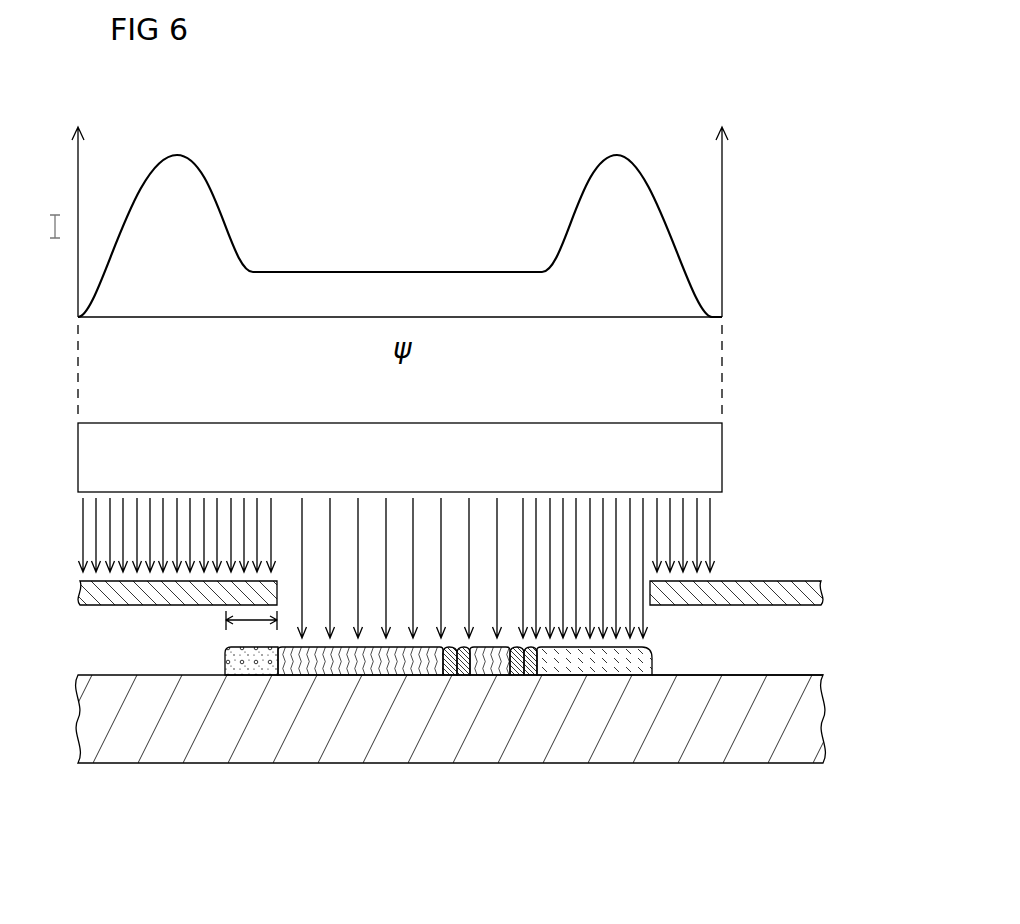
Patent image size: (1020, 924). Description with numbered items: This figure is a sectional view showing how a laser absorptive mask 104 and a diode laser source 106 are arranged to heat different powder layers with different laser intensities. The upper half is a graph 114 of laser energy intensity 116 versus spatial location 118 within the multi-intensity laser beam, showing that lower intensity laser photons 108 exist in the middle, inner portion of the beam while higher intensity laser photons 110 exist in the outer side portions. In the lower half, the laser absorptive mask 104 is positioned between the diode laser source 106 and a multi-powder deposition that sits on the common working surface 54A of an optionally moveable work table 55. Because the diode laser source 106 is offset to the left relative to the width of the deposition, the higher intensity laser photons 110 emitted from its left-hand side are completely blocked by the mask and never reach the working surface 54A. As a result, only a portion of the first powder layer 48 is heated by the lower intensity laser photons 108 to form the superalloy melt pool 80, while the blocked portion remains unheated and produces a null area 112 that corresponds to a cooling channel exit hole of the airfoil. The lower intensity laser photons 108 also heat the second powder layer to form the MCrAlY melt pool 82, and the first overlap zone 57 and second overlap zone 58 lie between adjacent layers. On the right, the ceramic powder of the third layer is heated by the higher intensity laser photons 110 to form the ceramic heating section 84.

The first powder layer 48 is at (248, 662).
The superalloy melt pool 80 is at (345, 662).
The first overlap zone 57 is at (443, 680).
The MCrAlY melt pool 82 is at (493, 662).
The second overlap zone 58 is at (510, 680).
The ceramic heating section 84 is at (600, 664).
The work table 55 is at (601, 752).
The working surface 54A is at (683, 675).
The laser absorptive mask 104 is at (118, 606).
The diode laser source 106 is at (419, 463).
The lower intensity laser photons 108 is at (360, 532).
The higher intensity laser photons 110 is at (83, 541).
The null area 112 is at (226, 627).
The graph 114 is at (217, 200).
The laser energy intensity 116 is at (80, 176).
The spatial location 118 is at (578, 318).